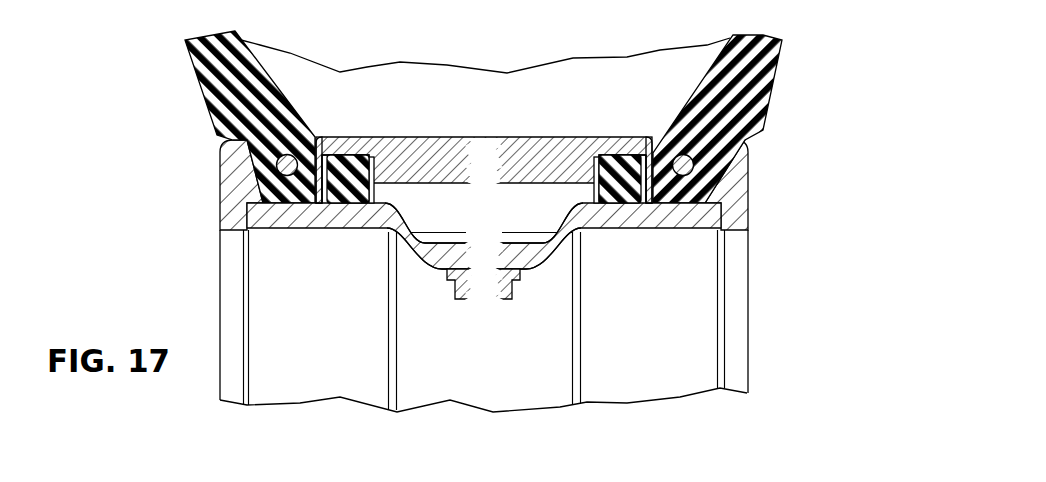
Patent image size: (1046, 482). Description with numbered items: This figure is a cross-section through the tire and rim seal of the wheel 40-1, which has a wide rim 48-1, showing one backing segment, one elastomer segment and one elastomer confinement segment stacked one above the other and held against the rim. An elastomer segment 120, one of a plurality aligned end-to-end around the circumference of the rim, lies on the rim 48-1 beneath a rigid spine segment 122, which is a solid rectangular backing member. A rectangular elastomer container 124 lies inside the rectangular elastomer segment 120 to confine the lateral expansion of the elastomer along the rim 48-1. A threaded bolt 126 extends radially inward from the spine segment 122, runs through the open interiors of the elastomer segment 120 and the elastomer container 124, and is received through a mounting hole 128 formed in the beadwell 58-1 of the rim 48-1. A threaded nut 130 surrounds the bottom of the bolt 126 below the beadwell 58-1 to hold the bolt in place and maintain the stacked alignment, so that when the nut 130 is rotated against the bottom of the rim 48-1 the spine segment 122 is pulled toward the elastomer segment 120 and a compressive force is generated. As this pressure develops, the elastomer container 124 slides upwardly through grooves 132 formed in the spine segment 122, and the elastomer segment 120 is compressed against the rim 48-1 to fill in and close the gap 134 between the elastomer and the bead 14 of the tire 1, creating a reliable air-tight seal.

The tire 1 is at (783, 67).
The bead 14 is at (276, 167).
The wheel 40-1 is at (750, 223).
The rim 48-1 is at (280, 228).
The beadwell 58-1 is at (463, 256).
The elastomer segment 120 is at (324, 152).
The spine segment 122 is at (520, 165).
The elastomer container 124 is at (378, 168).
The threaded bolt 126 is at (486, 333).
The mounting hole 128 is at (433, 258).
The threaded nut 130 is at (513, 287).
The grooves 132 is at (362, 158).
The gap 134 is at (320, 195).